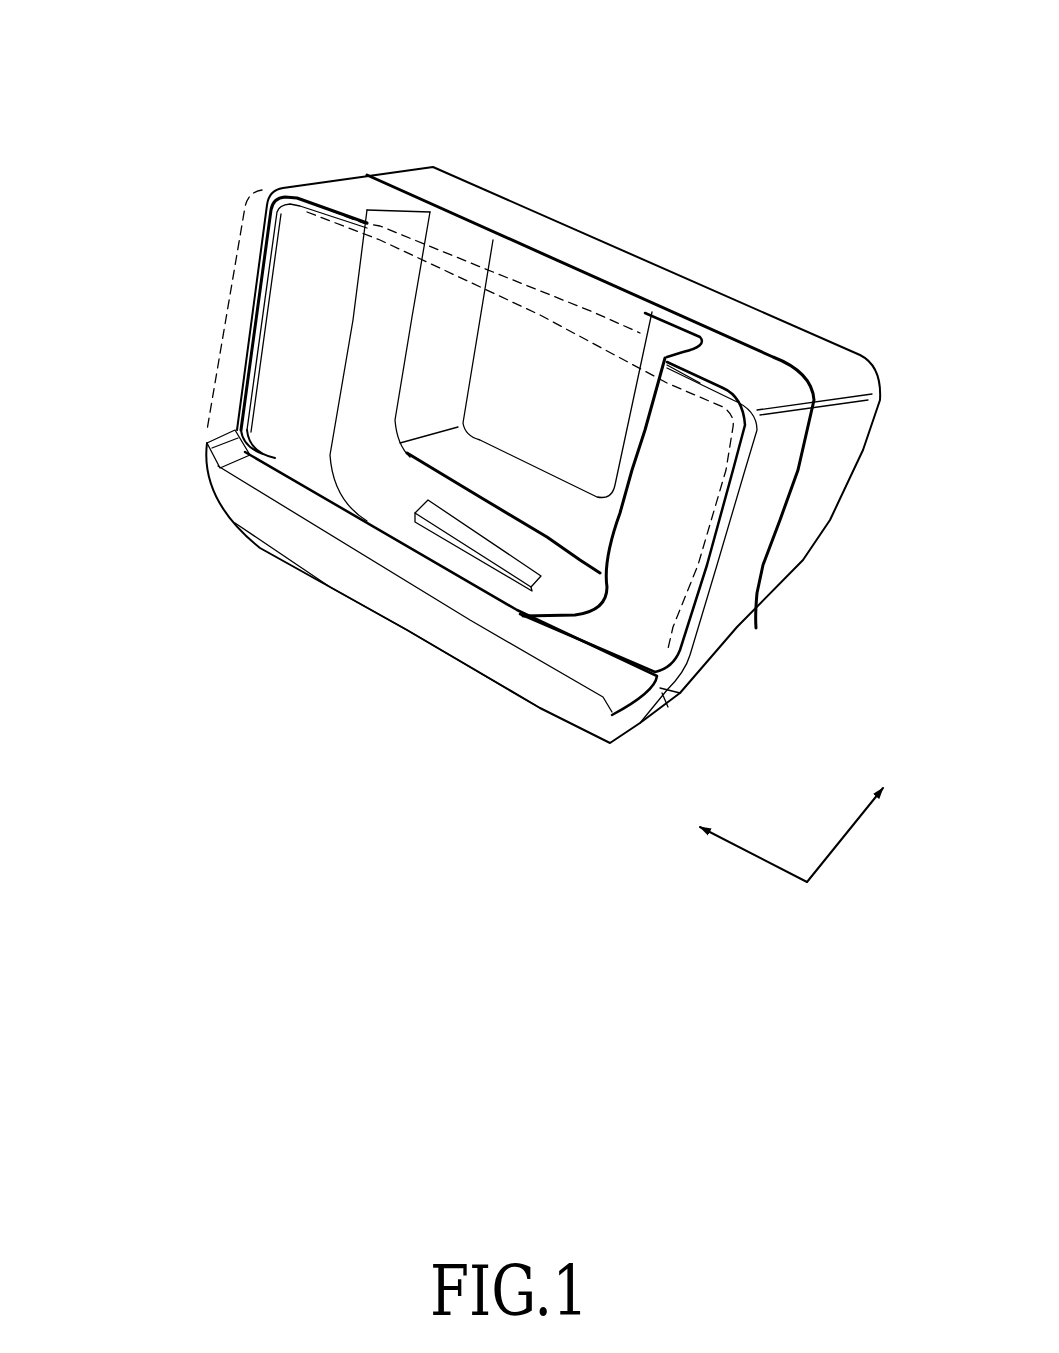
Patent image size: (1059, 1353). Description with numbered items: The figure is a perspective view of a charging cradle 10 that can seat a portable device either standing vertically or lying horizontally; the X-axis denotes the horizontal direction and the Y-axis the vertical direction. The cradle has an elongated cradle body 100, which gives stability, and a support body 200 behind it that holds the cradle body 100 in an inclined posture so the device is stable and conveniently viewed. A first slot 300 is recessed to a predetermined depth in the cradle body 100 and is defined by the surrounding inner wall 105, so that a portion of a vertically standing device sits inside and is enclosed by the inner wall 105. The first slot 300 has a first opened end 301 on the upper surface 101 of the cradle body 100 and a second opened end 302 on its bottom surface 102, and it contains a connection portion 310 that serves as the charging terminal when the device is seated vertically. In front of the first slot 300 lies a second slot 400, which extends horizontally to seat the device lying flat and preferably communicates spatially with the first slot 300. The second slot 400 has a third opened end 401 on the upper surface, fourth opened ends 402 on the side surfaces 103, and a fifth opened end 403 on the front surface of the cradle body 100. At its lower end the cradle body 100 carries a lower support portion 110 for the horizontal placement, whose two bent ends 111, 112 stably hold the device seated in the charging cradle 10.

The charging cradle 10 is at (701, 31).
The cradle body 100 is at (736, 663).
The upper surface 101 is at (740, 367).
The bottom surface 102 is at (288, 247).
The side surfaces 103 is at (750, 514).
The inner wall 105 is at (400, 273).
The lower support portion 110 is at (307, 552).
The end of lower support portion 111 is at (662, 693).
The end of lower support portion 112 is at (197, 434).
The support body 200 is at (856, 492).
The first slot 300 is at (509, 265).
The first opened end 301 is at (668, 300).
The second opened end 302 is at (529, 372).
The connection portion 310 is at (477, 538).
The second slot 400 is at (226, 306).
The third opened end 401 is at (636, 324).
The fourth opened ends 402 is at (232, 388).
The fifth opened end 403 is at (717, 453).